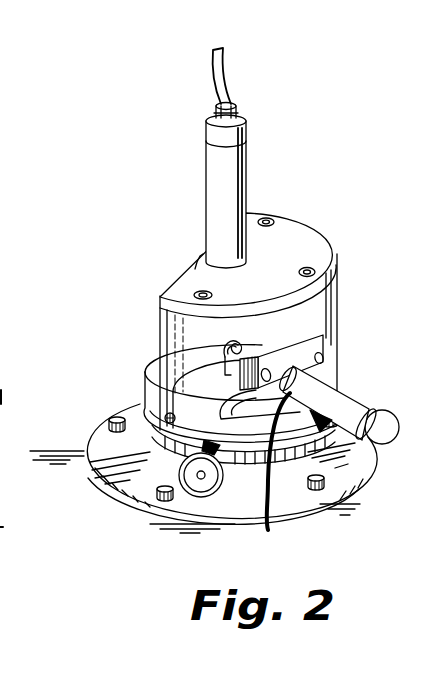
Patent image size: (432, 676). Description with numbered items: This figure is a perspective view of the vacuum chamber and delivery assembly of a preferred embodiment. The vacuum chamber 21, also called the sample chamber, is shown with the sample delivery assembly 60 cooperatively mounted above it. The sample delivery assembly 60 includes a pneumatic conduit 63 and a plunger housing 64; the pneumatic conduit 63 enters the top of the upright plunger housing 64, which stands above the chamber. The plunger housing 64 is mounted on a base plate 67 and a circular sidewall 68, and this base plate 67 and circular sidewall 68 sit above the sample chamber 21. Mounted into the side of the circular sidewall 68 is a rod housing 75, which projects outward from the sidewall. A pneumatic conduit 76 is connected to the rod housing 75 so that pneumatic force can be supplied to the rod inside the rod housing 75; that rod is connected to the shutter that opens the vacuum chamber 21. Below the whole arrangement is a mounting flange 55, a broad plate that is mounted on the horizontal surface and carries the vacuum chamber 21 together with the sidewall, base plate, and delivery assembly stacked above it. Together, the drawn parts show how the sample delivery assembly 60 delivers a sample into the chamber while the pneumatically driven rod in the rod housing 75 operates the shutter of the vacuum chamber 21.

The vacuum chamber 21 is at (131, 390).
The mounting flange 55 is at (125, 487).
The sample delivery assembly 60 is at (237, 154).
The pneumatic conduit 63 is at (229, 83).
The plunger housing 64 is at (243, 168).
The base plate 67 is at (315, 236).
The circular sidewall 68 is at (338, 300).
The rod housing 75 is at (363, 405).
The pneumatic conduit 76 is at (277, 490).